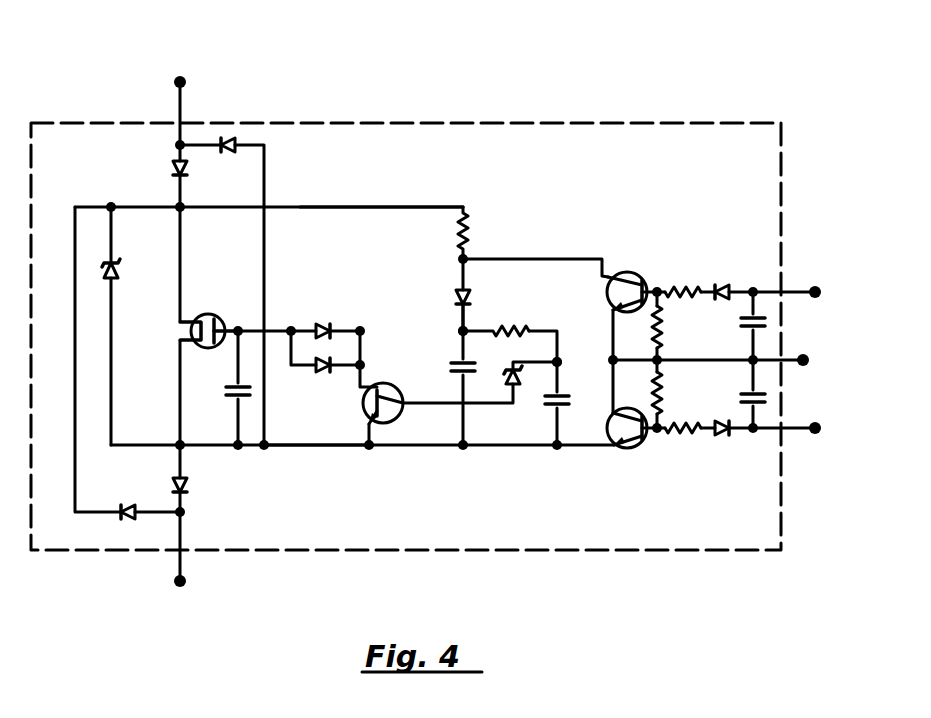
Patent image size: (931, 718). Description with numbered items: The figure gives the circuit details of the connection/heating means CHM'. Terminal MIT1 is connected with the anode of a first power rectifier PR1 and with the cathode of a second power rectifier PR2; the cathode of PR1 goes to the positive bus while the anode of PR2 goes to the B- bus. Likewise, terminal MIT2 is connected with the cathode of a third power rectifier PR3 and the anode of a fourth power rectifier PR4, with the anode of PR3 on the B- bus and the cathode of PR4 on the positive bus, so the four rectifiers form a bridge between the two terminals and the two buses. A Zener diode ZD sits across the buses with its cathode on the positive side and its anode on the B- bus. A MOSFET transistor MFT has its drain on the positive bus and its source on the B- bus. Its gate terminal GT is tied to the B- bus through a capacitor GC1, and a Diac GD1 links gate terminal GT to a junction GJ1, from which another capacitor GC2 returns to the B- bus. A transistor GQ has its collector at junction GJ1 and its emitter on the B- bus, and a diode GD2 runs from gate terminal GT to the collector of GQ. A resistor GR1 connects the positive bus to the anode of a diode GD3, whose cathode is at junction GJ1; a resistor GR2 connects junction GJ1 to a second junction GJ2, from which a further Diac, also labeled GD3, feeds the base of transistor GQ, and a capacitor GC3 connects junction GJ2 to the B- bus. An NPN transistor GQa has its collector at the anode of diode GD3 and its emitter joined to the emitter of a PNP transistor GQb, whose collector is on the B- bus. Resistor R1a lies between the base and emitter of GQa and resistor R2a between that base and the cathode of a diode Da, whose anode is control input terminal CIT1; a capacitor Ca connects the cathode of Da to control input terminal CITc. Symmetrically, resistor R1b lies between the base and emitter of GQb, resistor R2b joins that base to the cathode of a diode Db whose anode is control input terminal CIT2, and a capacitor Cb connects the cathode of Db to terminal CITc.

The connection/heating means CHM' is at (406, 275).
The terminal MIT1 is at (185, 78).
The terminal MIT2 is at (185, 587).
The first power rectifier PR1 is at (168, 173).
The second power rectifier PR2 is at (245, 155).
The third power rectifier PR3 is at (189, 497).
The fourth power rectifier PR4 is at (140, 504).
The B− bus B- is at (326, 448).
The Zener diode ZD is at (112, 280).
The MOSFET transistor MFT is at (205, 346).
The gate terminal GT is at (238, 323).
The capacitor GC1 is at (232, 400).
The Diac GD1 is at (326, 323).
The diode GD2 is at (326, 372).
The diode GD3 is at (458, 290).
The transistor GQ is at (392, 425).
The resistor GR1 is at (470, 238).
The resistor GR2 is at (518, 322).
The junction GJ1 is at (462, 327).
The junction GJ2 is at (585, 335).
The capacitor GC2 is at (458, 366).
The capacitor GC3 is at (567, 409).
The NPN transistor GQa is at (627, 271).
The PNP transistor GQb is at (618, 447).
The resistor R1a is at (665, 336).
The resistor R1b is at (662, 390).
The resistor R2a is at (680, 283).
The resistor R2b is at (682, 435).
The diode Da is at (718, 282).
The diode Db is at (723, 438).
The capacitor Ca is at (762, 312).
The capacitor Cb is at (760, 410).
The control input terminal CIT1 is at (818, 288).
The control input terminal CITc is at (806, 359).
The control input terminal CIT2 is at (822, 430).